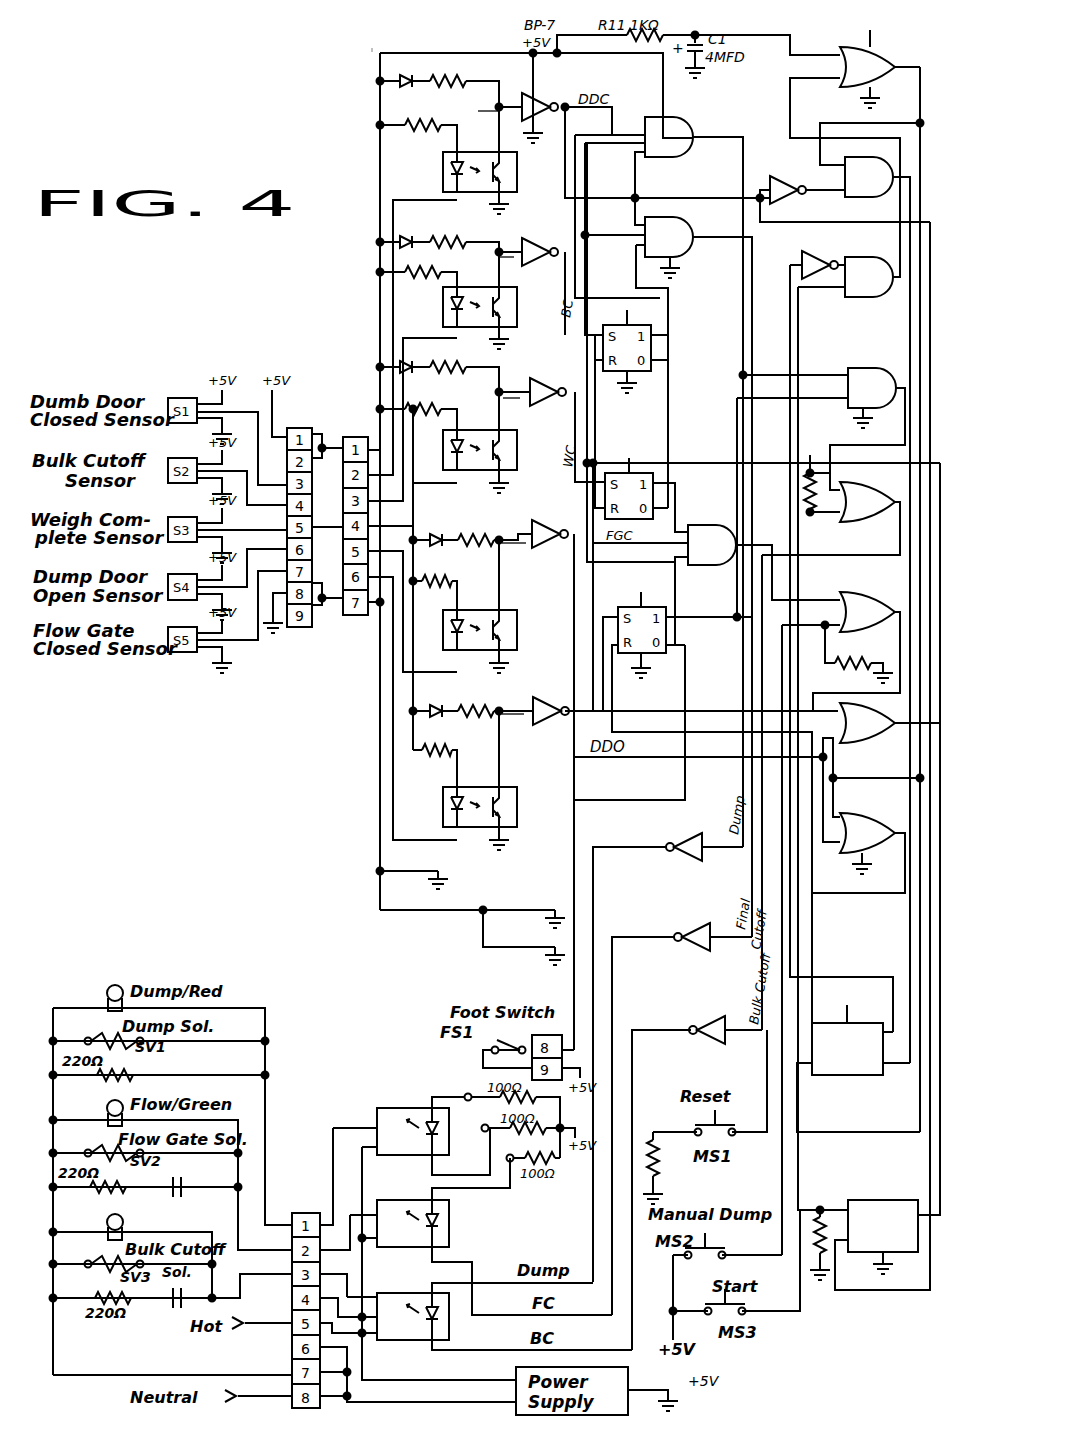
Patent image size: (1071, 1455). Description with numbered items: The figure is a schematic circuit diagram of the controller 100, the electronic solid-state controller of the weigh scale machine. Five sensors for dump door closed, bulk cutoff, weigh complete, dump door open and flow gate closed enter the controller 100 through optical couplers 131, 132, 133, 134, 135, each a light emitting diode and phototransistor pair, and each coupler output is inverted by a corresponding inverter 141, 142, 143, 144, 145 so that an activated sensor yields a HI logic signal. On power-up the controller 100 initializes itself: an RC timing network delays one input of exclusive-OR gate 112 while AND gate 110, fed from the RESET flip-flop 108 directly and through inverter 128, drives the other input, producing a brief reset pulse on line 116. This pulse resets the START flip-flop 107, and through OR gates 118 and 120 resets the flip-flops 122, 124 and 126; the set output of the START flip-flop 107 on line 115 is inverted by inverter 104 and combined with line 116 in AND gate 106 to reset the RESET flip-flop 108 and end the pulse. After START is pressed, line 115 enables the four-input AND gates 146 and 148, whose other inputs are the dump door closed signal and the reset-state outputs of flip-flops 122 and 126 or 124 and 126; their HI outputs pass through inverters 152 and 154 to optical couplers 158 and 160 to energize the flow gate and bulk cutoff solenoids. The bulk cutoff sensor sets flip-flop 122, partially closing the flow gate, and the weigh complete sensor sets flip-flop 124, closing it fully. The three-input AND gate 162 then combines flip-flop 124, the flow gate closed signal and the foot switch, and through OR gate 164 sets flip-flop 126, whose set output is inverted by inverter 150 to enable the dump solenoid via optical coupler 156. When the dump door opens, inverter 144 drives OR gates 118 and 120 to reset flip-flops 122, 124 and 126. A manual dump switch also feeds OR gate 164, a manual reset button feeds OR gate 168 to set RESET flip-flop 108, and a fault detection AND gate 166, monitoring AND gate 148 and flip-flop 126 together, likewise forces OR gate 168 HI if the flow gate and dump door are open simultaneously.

The controller 100 is at (285, 810).
The inverter 104 is at (785, 184).
The AND gate 106 is at (893, 168).
The start flip-flop 107 is at (870, 1198).
The RESET flip-flop 108 is at (838, 1080).
The AND gate 110 is at (865, 298).
The exclusive-OR gate 112 is at (896, 60).
The line 115 is at (708, 196).
The line 116 is at (918, 120).
The OR gate 118 is at (870, 745).
The OR gate 120 is at (878, 822).
The flip-flop 122 is at (650, 372).
The flip-flop 124 is at (630, 466).
The flip-flop 126 is at (665, 645).
The inverter 128 is at (800, 250).
The optical coupler 131 is at (441, 170).
The optical coupler 132 is at (443, 316).
The optical coupler 133 is at (517, 458).
The optical coupler 134 is at (517, 620).
The optical coupler 135 is at (517, 806).
The inverter 141 is at (545, 100).
The inverter 142 is at (538, 242).
The inverter 143 is at (541, 380).
The inverter 144 is at (546, 518).
The inverter 145 is at (548, 732).
The 4-input AND gate 146 is at (686, 122).
The 4-input AND gate 148 is at (690, 250).
The inverter 150 is at (685, 858).
The inverter 152 is at (692, 948).
The inverter 154 is at (708, 1040).
The optical coupler 156 is at (380, 1107).
The optical coupler 158 is at (390, 1200).
The optical coupler 160 is at (390, 1293).
The 3-input AND gate 162 is at (700, 522).
The OR gate 164 is at (863, 600).
The AND gate 166 is at (860, 365).
The OR gate 168 is at (873, 522).